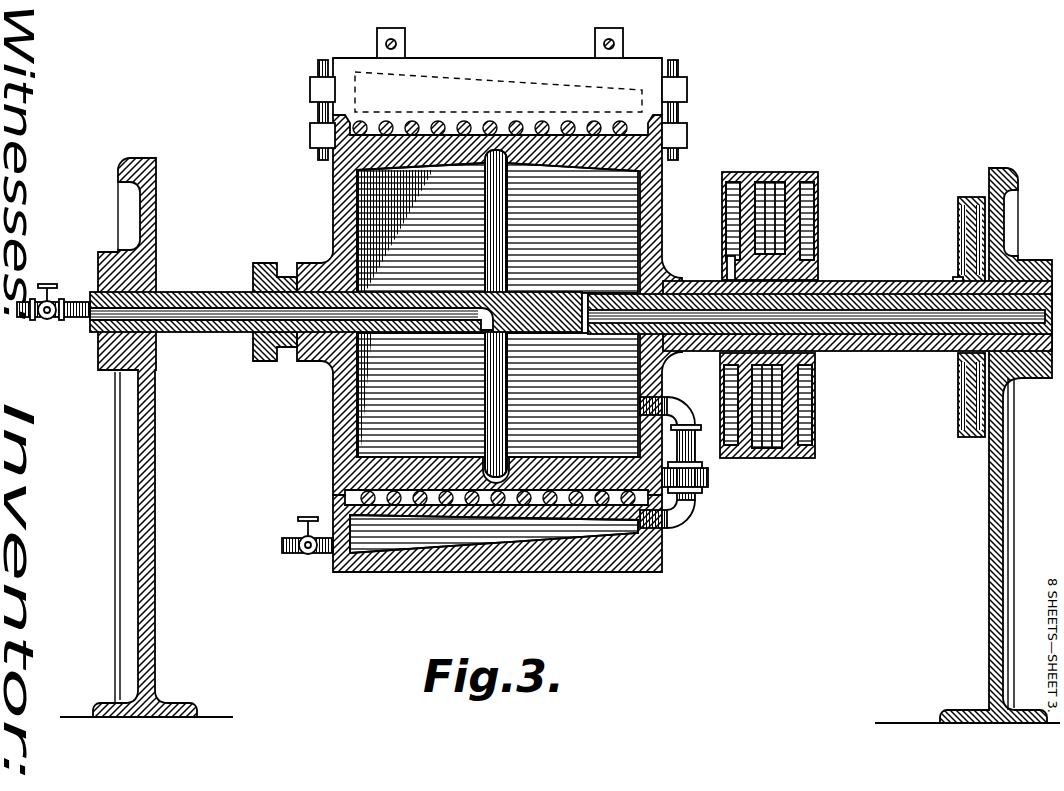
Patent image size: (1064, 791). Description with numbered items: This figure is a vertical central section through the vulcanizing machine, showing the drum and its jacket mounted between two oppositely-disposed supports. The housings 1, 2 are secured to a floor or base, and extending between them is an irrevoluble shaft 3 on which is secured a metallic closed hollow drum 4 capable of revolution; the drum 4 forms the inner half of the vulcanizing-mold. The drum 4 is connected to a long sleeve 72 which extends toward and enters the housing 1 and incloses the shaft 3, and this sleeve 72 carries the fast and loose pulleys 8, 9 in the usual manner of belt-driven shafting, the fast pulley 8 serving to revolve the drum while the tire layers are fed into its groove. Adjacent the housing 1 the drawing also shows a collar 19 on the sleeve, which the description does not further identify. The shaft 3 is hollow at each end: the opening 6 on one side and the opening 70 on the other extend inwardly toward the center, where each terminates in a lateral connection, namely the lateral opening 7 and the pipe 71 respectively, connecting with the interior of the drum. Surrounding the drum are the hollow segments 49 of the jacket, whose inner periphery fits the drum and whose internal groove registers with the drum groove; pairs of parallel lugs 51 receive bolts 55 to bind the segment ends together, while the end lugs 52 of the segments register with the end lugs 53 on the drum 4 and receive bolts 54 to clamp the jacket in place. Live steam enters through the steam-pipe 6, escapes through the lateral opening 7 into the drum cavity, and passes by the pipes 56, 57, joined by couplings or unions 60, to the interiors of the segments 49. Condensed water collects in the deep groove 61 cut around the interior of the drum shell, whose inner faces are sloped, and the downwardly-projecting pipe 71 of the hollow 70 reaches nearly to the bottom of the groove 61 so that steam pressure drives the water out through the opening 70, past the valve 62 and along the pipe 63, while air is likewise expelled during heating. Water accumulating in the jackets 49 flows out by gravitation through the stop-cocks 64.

The housing 1 is at (988, 548).
The housing 2 is at (156, 580).
The shaft 3 is at (215, 333).
The drum 4 is at (333, 418).
The steam-pipe opening 6 is at (618, 325).
The lateral opening 7 is at (581, 333).
The fast pulley 8 is at (770, 214).
The loose pulley 9 is at (767, 303).
The collar 19 is at (972, 197).
The jacket segment 49 is at (496, 590).
The parallel lugs 51 is at (405, 42).
The end lugs 52 is at (310, 90).
The end lugs 53 is at (310, 135).
The bolts 54 is at (318, 112).
The bolts 55 is at (386, 45).
The steam pipe 56 is at (680, 448).
The steam pipe 57 is at (697, 500).
The couplings or unions 60 is at (708, 477).
The groove 61 is at (557, 570).
The valve 62 is at (52, 275).
The pipe 63 is at (22, 318).
The stop-cocks 64 is at (303, 554).
The hollow opening 70 is at (208, 302).
The downwardly-projecting pipe 71 is at (482, 433).
The sleeve 72 is at (872, 282).